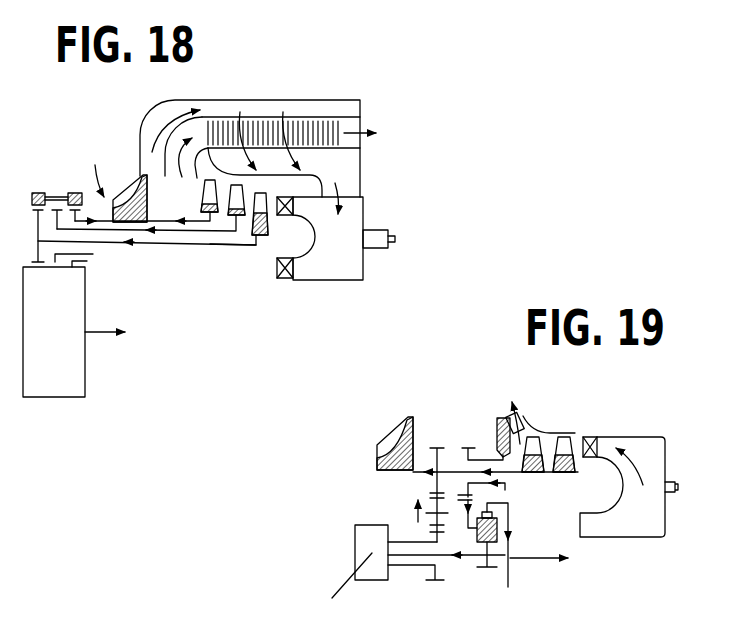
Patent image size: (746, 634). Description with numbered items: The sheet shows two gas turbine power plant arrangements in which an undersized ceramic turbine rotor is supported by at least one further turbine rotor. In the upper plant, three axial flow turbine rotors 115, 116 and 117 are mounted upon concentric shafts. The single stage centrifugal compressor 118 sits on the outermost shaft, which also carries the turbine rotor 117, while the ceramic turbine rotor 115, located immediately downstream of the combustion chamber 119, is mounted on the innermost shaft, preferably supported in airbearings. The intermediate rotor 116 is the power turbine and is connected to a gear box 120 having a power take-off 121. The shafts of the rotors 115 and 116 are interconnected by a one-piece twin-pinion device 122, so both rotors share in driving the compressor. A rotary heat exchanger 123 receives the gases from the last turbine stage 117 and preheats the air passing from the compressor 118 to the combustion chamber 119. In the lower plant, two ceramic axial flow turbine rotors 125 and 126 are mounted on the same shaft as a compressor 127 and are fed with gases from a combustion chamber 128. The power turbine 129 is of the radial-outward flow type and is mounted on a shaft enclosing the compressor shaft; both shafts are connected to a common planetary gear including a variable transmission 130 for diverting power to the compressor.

In FIG. 18, the axial flow turbine rotor 115 is at (262, 243).
In FIG. 18, the intermediate rotor 116 is at (217, 290).
In FIG. 18, the axial flow turbine rotor 117 is at (207, 214).
In FIG. 18, the single stage centrifugal compressor 118 is at (132, 192).
In FIG. 18, the combustion chamber 119 is at (350, 258).
In FIG. 18, the gear box 120 is at (65, 378).
In FIG. 18, the power take-off 121 is at (98, 328).
In FIG. 18, the twin-pinion device 122 is at (62, 190).
In FIG. 18, the heat exchanger 123 is at (300, 122).
In FIG. 19, the ceramic axial flow turbine rotor 125 is at (577, 443).
In FIG. 19, the ceramic axial flow turbine rotor 126 is at (543, 450).
In FIG. 19, the compressor 127 is at (395, 440).
In FIG. 19, the combustion chamber 128 is at (657, 463).
In FIG. 19, the power turbine 129 is at (523, 417).
In FIG. 19, the variable transmission 130 is at (360, 535).